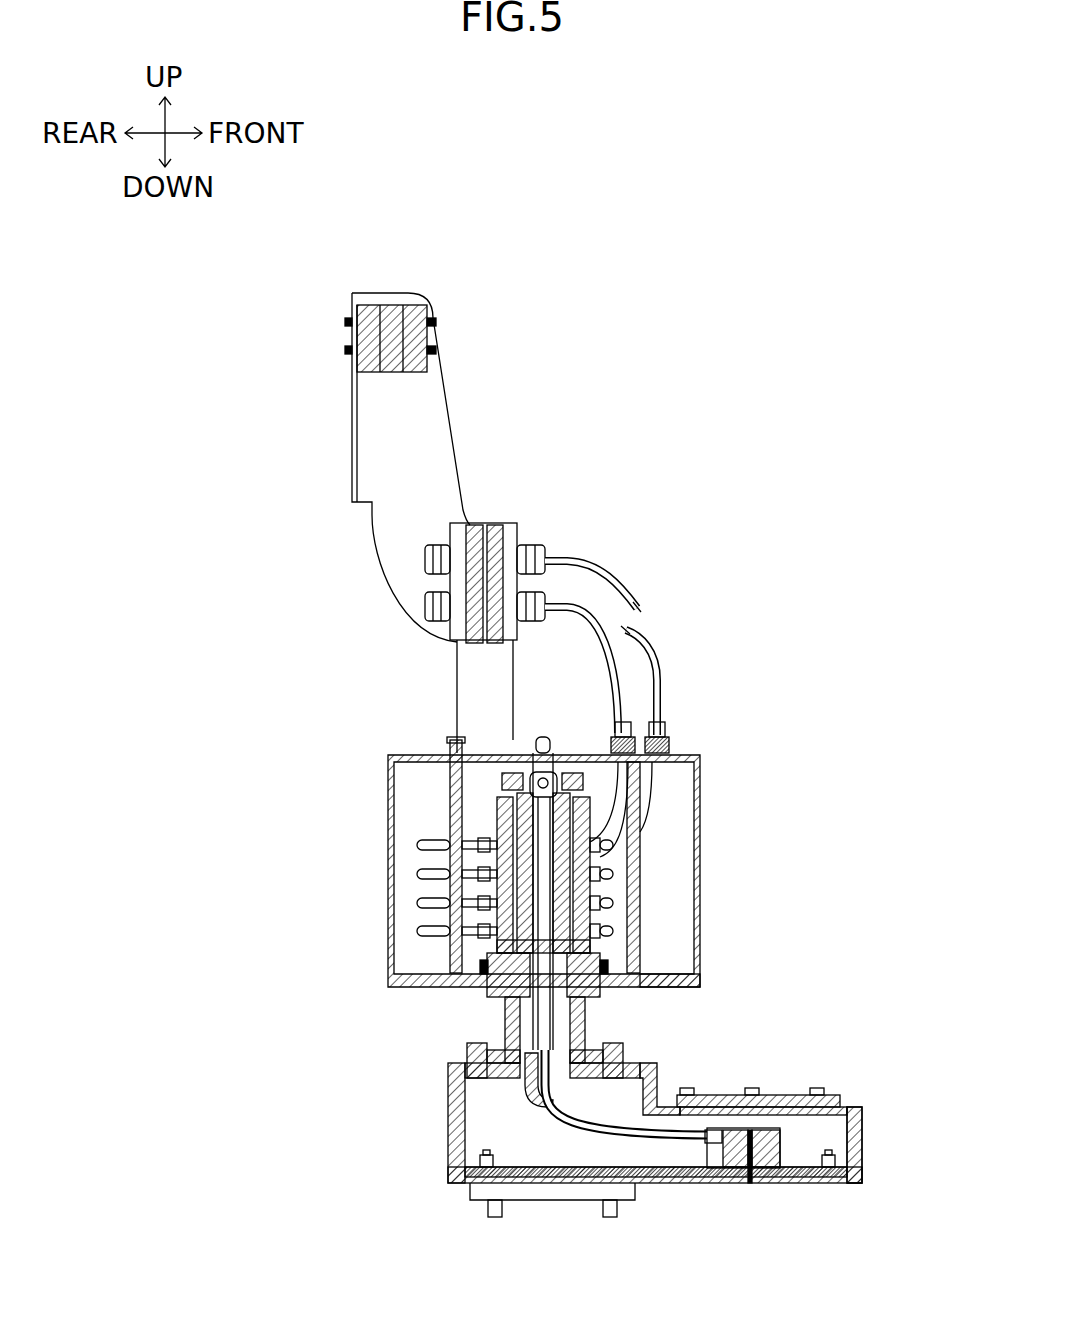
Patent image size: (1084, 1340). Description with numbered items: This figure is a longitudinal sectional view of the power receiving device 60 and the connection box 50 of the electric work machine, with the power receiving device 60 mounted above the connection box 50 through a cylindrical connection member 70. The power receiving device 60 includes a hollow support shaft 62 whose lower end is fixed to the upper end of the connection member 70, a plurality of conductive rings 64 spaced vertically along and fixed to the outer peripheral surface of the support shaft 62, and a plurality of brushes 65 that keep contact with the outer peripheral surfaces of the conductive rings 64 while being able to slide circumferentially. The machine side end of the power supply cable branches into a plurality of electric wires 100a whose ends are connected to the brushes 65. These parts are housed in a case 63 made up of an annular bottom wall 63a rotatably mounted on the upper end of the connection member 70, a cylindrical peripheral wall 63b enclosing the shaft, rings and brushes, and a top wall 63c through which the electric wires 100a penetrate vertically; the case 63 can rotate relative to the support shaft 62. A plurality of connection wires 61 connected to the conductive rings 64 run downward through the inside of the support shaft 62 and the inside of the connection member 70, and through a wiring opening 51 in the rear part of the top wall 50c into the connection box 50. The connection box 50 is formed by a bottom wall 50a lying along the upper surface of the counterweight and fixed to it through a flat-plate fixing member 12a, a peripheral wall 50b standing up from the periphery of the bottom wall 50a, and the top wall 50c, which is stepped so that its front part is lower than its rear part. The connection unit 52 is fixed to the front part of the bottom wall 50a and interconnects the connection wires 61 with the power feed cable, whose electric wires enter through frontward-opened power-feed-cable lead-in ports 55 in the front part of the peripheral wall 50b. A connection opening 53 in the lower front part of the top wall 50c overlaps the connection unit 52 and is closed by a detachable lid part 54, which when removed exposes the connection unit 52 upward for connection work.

The electric wires 100a is at (610, 578).
The power receiving device 60 is at (323, 780).
The conductive rings 64 is at (466, 862).
The brushes 65 is at (483, 852).
The support shaft 62 is at (498, 942).
The case 63 is at (729, 854).
The bottom wall 63a is at (720, 954).
The peripheral wall 63b is at (700, 838).
The top wall 63c is at (697, 743).
The connection wires 61 is at (503, 1025).
The connection member 70 is at (585, 1020).
The connection box 50 is at (626, 1151).
The wiring opening 51 is at (468, 1078).
The top wall 50c is at (655, 1110).
The connection opening 53 is at (813, 1127).
The lid part 54 is at (783, 1095).
The power-feed-cable lead-in ports 55 is at (863, 1145).
The peripheral wall 50b is at (450, 1143).
The bottom wall 50a is at (690, 1183).
The connection unit 52 is at (768, 1167).
The fixing member 12a is at (470, 1190).